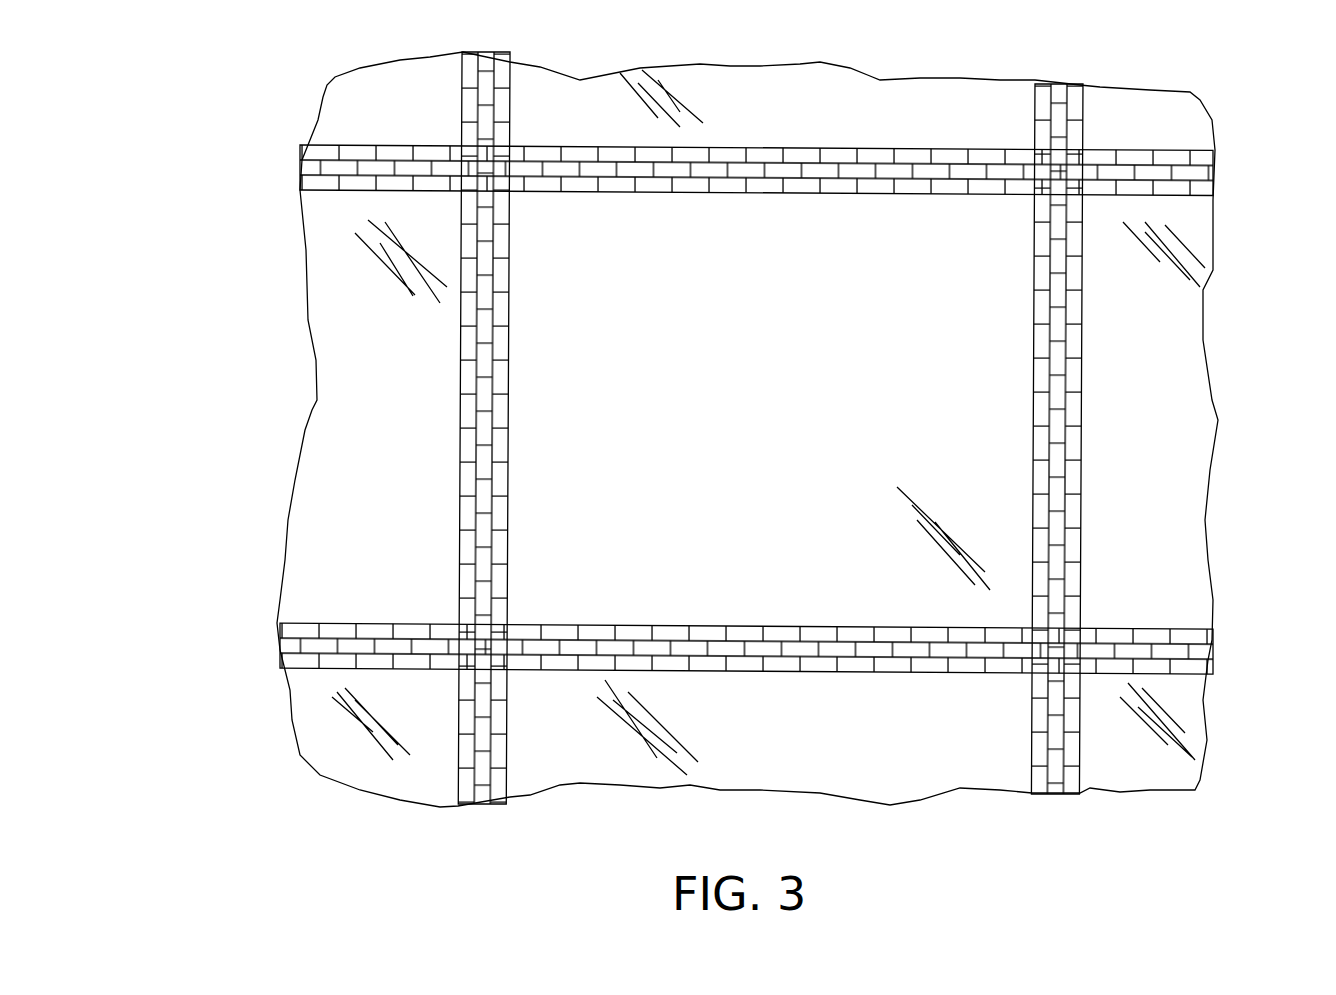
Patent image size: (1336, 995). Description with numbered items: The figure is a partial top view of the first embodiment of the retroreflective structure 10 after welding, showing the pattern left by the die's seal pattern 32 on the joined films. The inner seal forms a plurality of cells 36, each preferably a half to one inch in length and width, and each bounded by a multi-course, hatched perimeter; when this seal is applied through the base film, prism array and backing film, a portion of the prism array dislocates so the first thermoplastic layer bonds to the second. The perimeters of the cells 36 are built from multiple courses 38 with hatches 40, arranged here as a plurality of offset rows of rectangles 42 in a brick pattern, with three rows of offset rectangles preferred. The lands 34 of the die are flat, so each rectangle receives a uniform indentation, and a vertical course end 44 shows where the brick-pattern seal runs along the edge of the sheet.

The building panel 10 is at (736, 447).
The seal pattern 32 is at (764, 170).
The lands 34 is at (465, 782).
The cells 36 is at (1200, 428).
The courses 38 is at (308, 660).
The hatches 40 is at (746, 441).
The offset rows of rectangles 42 is at (1232, 172).
The upper end of vertical reinforcing strip 44 is at (480, 439).